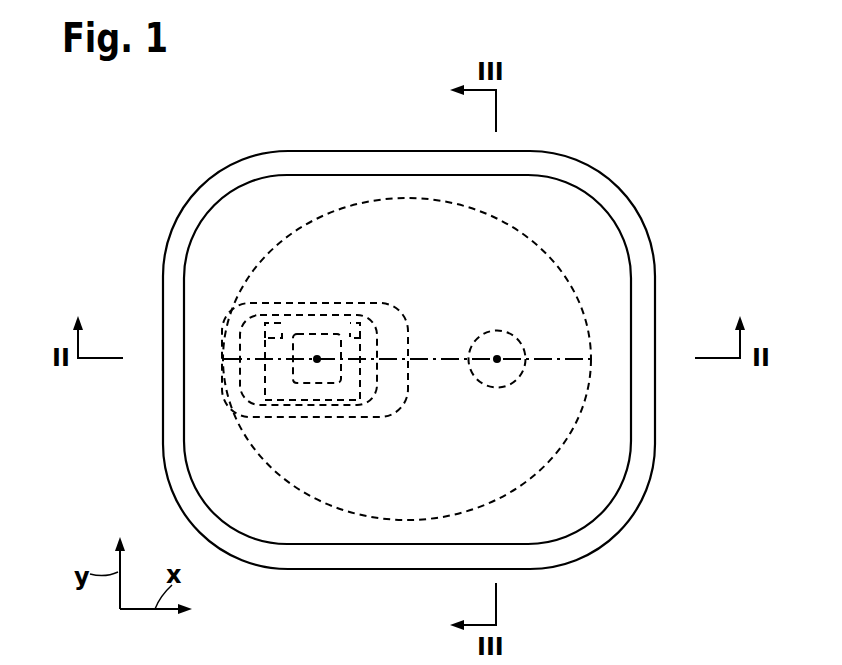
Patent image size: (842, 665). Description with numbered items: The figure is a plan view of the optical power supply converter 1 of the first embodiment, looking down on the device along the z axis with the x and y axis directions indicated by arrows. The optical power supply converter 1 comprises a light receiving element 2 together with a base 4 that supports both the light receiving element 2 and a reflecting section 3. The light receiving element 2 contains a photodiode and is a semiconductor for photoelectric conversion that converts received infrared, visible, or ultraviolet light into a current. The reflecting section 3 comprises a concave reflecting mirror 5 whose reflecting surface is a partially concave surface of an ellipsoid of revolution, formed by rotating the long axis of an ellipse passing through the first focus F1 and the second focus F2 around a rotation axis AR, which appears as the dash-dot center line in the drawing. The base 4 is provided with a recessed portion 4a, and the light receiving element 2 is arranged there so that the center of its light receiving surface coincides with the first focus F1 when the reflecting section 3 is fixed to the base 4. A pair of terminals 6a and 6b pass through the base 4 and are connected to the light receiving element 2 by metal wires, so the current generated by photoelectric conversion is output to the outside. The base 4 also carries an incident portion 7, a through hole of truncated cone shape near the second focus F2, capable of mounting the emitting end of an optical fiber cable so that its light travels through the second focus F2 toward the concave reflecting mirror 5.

The optical power supply converter 1 is at (183, 196).
The light receiving element 2 is at (313, 356).
The reflecting section 3 is at (313, 175).
The base 4 is at (261, 151).
The recessed portion 4a is at (288, 314).
The concave reflecting mirror 5 is at (437, 199).
The terminal 6a is at (360, 395).
The terminal 6b is at (265, 378).
The incident portion 7 is at (520, 352).
The first focus F1 is at (313, 366).
The second focus F2 is at (496, 364).
The rotation axis AR is at (549, 362).